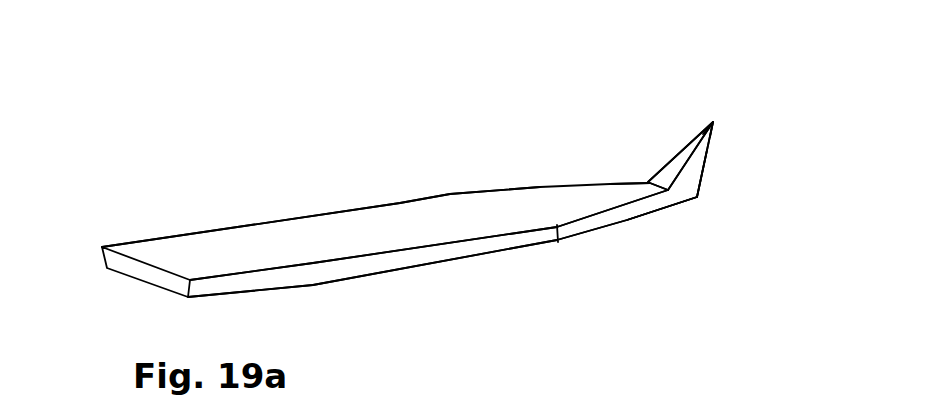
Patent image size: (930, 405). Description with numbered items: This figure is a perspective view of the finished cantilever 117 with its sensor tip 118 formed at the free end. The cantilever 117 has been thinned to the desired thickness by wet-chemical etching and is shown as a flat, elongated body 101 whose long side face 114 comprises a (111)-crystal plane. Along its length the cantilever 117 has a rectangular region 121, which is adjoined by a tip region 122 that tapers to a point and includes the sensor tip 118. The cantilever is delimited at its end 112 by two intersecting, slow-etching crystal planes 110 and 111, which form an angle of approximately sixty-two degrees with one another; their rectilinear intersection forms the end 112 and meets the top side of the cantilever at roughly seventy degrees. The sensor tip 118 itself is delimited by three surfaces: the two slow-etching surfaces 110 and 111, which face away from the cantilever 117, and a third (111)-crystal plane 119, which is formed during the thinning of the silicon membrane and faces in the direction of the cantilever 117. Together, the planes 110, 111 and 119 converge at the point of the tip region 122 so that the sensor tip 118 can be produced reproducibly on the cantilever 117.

The strip body 101 is at (353, 237).
The slow-etching crystal plane 110 is at (692, 182).
The slow-etching crystal plane 111 is at (687, 150).
The end 112 is at (712, 145).
The side face 114 is at (500, 243).
The cantilever 117 is at (280, 247).
The sensor tip 118 is at (713, 122).
The (111)-crystal plane 119 is at (670, 170).
The rectangular region 121 is at (313, 263).
The tip region 122 is at (623, 205).